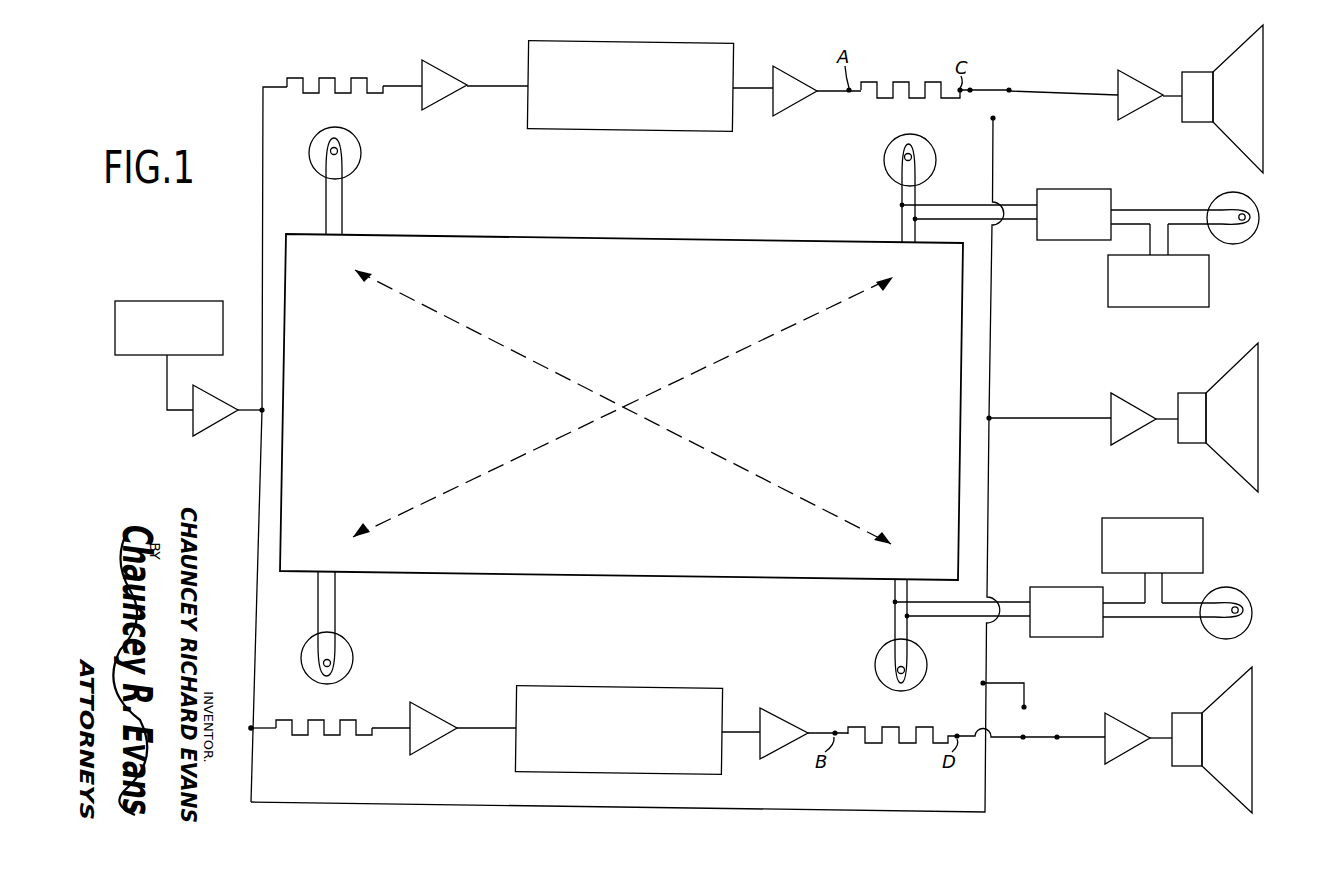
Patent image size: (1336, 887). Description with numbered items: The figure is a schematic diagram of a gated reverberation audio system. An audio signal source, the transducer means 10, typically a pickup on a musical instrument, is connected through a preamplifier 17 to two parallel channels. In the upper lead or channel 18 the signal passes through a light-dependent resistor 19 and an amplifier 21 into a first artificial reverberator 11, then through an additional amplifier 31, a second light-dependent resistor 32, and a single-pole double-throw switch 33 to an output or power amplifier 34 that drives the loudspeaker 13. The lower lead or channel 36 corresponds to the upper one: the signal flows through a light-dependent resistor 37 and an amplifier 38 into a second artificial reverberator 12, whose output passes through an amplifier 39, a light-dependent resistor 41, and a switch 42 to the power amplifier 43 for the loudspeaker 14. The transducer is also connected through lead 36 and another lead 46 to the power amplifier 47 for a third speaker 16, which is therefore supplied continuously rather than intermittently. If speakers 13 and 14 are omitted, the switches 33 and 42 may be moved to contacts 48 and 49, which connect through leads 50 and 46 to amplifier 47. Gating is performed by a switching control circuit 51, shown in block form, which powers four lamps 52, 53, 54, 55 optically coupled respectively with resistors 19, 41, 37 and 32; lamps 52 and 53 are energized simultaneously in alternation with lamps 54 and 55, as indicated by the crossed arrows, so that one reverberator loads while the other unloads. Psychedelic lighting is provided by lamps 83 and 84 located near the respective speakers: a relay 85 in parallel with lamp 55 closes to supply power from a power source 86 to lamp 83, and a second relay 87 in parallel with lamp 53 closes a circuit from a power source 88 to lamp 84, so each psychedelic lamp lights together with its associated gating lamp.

The transducer means 10 is at (173, 300).
The artificial reverberator 11 is at (653, 124).
The artificial reverberator 12 is at (609, 687).
The loudspeaker 13 is at (1257, 78).
The loudspeaker 14 is at (1249, 730).
The third speaker 16 is at (1250, 409).
The preamplifier 17 is at (208, 426).
The upper lead or channel 18 is at (262, 193).
The light-dependent resistor 19 is at (333, 78).
The amplifier 21 is at (436, 68).
The amplifier 31 is at (786, 72).
The light-dependent resistor 32 is at (905, 82).
The single-pole double-throw switch 33 is at (993, 89).
The output or power amplifier 34 is at (1131, 78).
The lower lead or channel 36 is at (251, 607).
The light-dependent resistor 37 is at (329, 736).
The amplifier 38 is at (426, 711).
The amplifier 39 is at (771, 714).
The light-dependent resistor 41 is at (891, 727).
The switch 42 is at (1042, 733).
The power amplifier 43 is at (1118, 720).
The lead 46 is at (988, 509).
The power amplifier 47 is at (1128, 402).
The contact 48 is at (996, 118).
The contact 49 is at (1025, 707).
The lead 50 is at (990, 334).
The switching control circuit 51 is at (622, 487).
The lamp 52 is at (362, 153).
The lamp 53 is at (881, 650).
The lamp 54 is at (353, 657).
The lamp 55 is at (929, 143).
The psychedelic lamp 83 is at (1256, 208).
The psychedelic lamp 84 is at (1251, 626).
The relay 85 is at (1078, 190).
The power source 86 is at (1138, 300).
The relay 87 is at (1050, 591).
The power source 88 is at (1185, 518).